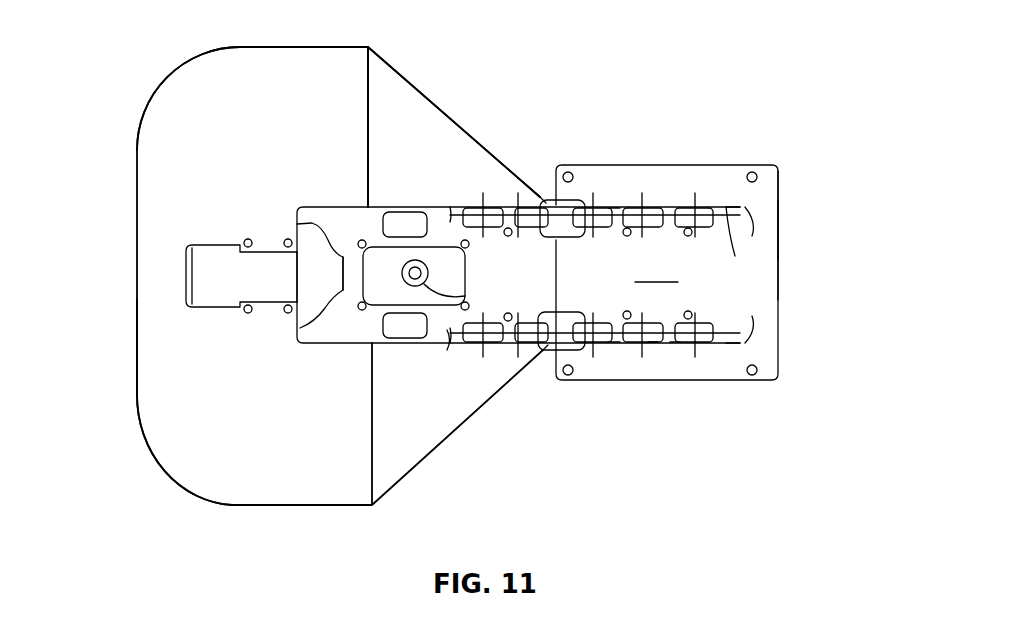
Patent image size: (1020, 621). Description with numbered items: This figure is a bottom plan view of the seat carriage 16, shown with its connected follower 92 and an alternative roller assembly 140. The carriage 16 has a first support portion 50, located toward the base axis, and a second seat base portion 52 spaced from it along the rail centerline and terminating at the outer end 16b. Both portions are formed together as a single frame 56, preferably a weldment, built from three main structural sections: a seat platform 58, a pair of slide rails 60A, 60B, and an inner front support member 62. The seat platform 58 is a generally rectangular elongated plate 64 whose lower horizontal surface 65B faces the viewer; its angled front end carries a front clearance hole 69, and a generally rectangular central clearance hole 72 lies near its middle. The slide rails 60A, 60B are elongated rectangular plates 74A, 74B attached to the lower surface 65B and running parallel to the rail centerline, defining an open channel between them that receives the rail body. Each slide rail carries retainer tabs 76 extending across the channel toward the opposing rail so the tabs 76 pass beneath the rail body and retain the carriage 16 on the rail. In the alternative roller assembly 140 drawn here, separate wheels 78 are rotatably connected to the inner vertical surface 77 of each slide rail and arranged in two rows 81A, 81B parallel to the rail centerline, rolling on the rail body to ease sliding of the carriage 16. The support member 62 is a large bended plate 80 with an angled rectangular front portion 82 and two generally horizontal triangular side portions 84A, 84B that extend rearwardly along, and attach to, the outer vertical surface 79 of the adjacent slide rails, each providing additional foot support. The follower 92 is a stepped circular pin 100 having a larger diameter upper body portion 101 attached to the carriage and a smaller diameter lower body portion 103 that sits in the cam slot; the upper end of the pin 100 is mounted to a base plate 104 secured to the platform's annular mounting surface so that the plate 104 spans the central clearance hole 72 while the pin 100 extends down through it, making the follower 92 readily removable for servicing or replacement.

The seat carriage 16 is at (597, 70).
The outer end of the seat carriage 16b is at (784, 222).
The first support portion 50 is at (118, 290).
The second seat base portion 52 is at (796, 268).
The frame 56 is at (430, 72).
The seat platform 58 is at (691, 162).
The left slide rail 60A is at (615, 206).
The right slide rail 60B is at (615, 345).
The front support member 62 is at (136, 400).
The platform plate 64 is at (675, 364).
The lower horizontal surface 65B is at (655, 268).
The front clearance hole 69 is at (304, 229).
The central clearance hole 72 is at (380, 247).
The first rail plate 74A is at (726, 205).
The second rail plate 74B is at (735, 358).
The retainer tab 76 is at (404, 209).
The inner vertical surface 77 is at (754, 275).
The wheel 78 is at (596, 230).
The outer vertical surface 79 is at (450, 206).
The bended plate 80 is at (191, 456).
The first row of wheels 81A is at (745, 246).
The second row of wheels 81B is at (447, 332).
The front portion of the support plate 82 is at (155, 157).
The first triangular side portion 84A is at (420, 140).
The second triangular side portion 84B is at (423, 410).
The follower 92 is at (399, 284).
The follower pin 100 is at (432, 266).
The upper body portion 101 is at (476, 299).
The lower body portion 103 is at (402, 271).
The base plate 104 is at (453, 278).
The roller assembly 140 is at (653, 345).